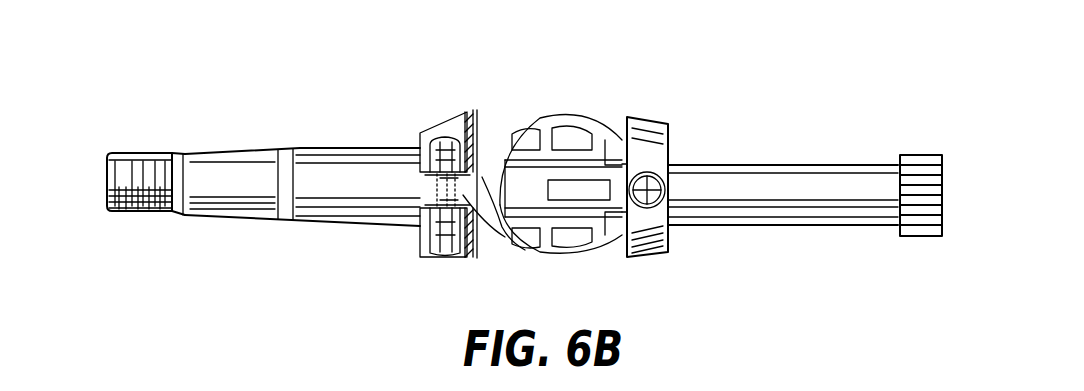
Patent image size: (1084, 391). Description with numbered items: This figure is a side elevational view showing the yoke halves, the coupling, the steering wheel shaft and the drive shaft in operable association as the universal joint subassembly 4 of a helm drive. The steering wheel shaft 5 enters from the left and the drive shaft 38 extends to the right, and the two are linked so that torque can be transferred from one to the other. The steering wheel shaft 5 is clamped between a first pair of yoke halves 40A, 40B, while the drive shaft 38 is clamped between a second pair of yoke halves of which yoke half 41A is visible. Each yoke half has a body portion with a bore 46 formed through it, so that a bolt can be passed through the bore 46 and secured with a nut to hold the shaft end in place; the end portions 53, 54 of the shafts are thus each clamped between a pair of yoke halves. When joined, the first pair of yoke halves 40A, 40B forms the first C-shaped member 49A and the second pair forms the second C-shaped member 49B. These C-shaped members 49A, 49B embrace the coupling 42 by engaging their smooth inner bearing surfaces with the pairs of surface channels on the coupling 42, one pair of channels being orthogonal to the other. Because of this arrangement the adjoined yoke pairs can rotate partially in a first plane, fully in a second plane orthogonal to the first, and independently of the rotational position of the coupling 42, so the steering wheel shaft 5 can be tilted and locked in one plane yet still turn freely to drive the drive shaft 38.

The universal joint subassembly 4 is at (565, 88).
The steering wheel shaft 5 is at (328, 147).
The drive shaft 38 is at (780, 168).
The yoke half 40A is at (514, 82).
The yoke half 40B is at (490, 272).
The yoke half 41A is at (655, 118).
The coupling 42 is at (575, 117).
The bore 46 is at (398, 226).
The first C-shaped member 49A is at (455, 262).
The second C-shaped member 49B is at (607, 253).
The end portion 53 is at (522, 255).
The end portion 54 is at (662, 222).